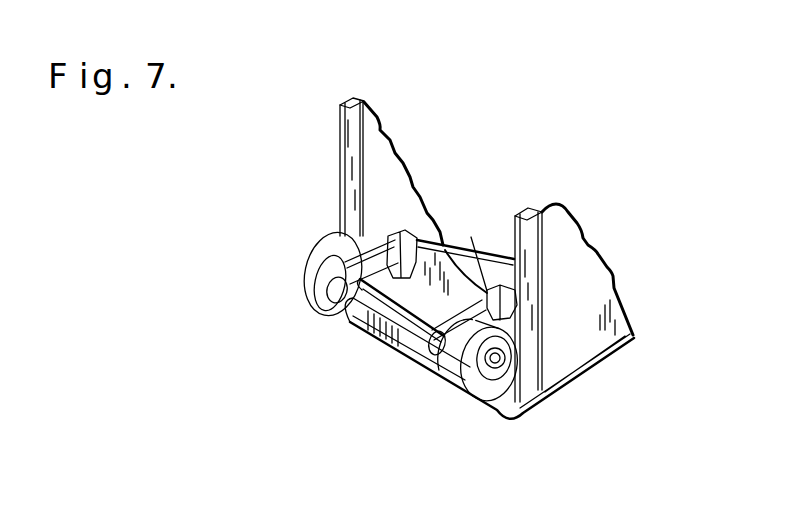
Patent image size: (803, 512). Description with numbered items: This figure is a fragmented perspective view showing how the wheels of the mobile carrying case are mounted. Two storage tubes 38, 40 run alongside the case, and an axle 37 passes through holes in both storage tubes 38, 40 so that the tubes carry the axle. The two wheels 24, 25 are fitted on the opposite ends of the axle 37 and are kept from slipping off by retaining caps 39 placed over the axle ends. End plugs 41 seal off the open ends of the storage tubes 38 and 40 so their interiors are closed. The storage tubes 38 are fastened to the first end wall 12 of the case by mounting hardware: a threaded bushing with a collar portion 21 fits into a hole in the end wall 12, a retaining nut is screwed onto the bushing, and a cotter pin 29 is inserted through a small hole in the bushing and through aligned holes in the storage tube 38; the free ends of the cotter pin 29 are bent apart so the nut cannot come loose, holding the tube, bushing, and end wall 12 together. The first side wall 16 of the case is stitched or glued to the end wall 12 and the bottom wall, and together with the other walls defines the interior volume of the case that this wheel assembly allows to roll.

The first end wall 12 is at (386, 160).
The first side wall 16 is at (558, 378).
The collar portion 21 is at (398, 233).
The wheel 24 is at (322, 250).
The wheel 25 is at (444, 387).
The cotter pin 29 is at (438, 240).
The axle 37 is at (347, 327).
The storage tube 38 is at (350, 244).
The retaining cap 39 is at (494, 368).
The storage tube 40 is at (508, 334).
The end plug 41 is at (322, 303).